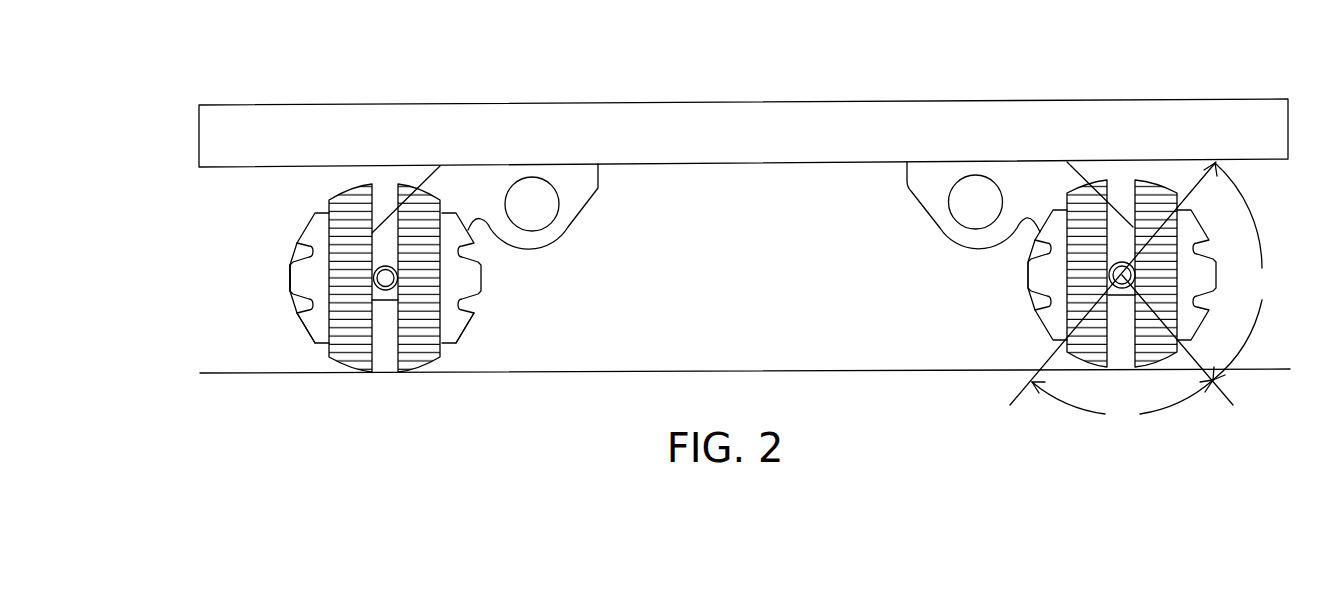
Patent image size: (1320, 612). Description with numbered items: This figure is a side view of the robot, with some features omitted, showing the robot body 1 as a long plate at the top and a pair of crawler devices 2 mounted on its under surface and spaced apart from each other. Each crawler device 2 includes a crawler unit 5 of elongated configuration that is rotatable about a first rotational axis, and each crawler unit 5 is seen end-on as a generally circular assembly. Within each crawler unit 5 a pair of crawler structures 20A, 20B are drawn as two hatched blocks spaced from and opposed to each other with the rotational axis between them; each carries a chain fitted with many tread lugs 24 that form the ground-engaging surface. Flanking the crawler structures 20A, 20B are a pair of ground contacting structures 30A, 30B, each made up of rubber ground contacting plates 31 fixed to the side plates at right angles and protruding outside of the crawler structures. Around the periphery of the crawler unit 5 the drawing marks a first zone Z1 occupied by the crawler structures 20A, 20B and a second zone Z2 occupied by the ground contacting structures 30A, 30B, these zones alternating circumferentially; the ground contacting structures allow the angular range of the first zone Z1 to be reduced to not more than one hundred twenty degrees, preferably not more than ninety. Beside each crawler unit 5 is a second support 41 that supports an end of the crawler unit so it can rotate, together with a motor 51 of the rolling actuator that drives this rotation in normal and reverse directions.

The robot body 1 is at (1192, 99).
The crawler device 2 is at (520, 266).
The crawler unit 5 is at (258, 266).
The crawler structure 20A is at (347, 196).
The crawler structure 20B is at (418, 205).
The tread lug 24 is at (337, 290).
The ground contacting structure 30A is at (315, 236).
The ground contacting structure 30B is at (468, 282).
The ground contacting plate 31 is at (320, 327).
The second support 41 is at (578, 184).
The motor 51 is at (533, 211).
The first zone Z1 is at (1122, 404).
The second zone Z2 is at (1144, 283).